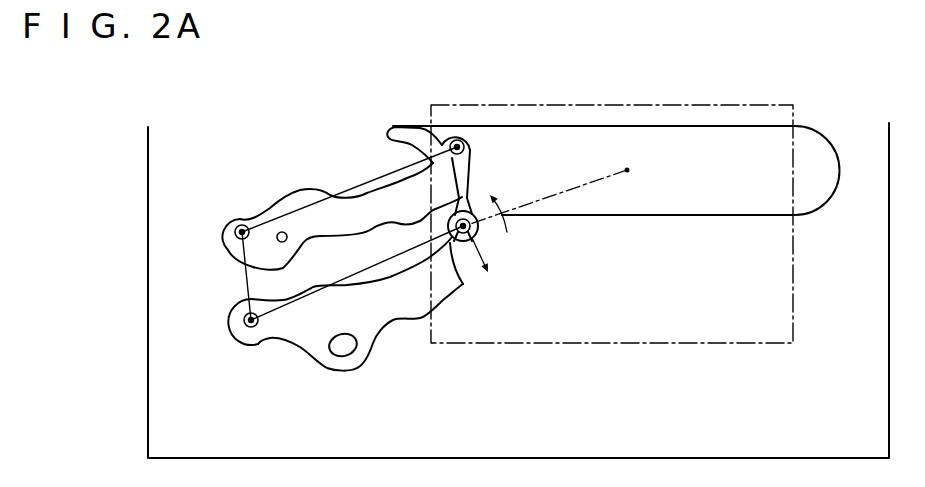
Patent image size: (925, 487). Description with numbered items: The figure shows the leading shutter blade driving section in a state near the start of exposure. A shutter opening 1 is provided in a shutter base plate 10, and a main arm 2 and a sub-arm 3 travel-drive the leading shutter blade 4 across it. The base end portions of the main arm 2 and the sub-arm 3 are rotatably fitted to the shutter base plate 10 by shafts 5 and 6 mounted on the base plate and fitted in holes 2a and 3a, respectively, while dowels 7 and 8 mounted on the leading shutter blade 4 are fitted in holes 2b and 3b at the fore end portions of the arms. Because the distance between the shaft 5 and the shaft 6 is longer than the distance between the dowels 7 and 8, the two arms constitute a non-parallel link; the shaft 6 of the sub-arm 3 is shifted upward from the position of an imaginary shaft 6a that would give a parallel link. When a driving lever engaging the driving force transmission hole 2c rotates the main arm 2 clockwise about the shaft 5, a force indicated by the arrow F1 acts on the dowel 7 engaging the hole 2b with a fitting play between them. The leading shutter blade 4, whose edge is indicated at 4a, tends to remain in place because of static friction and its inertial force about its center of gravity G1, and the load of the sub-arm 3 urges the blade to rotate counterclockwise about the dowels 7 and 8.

The shutter opening 1 is at (600, 344).
The main arm 2 is at (295, 340).
The hole 2a is at (237, 342).
The hole 2b is at (460, 258).
The driving force transmission hole 2c is at (347, 365).
The sub-arm 3 is at (313, 194).
The hole 3a is at (236, 223).
The hole 3b is at (462, 131).
The leading shutter blade 4 is at (817, 202).
The roller surface 4a is at (693, 125).
The shaft 5 is at (243, 320).
The shaft 6 is at (243, 224).
The imaginary shaft 6a is at (238, 241).
The dowel 7 is at (471, 213).
The dowel 8 is at (412, 128).
The shutter base plate 10 is at (160, 432).
The center of gravity G1 is at (569, 190).
The force F1 is at (495, 255).